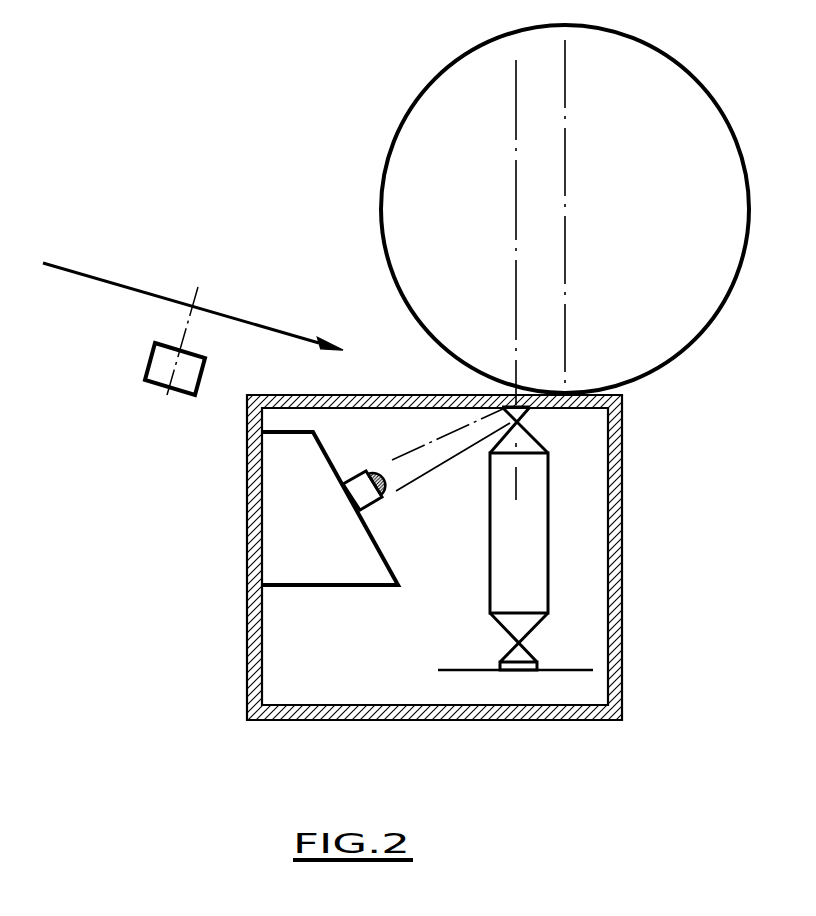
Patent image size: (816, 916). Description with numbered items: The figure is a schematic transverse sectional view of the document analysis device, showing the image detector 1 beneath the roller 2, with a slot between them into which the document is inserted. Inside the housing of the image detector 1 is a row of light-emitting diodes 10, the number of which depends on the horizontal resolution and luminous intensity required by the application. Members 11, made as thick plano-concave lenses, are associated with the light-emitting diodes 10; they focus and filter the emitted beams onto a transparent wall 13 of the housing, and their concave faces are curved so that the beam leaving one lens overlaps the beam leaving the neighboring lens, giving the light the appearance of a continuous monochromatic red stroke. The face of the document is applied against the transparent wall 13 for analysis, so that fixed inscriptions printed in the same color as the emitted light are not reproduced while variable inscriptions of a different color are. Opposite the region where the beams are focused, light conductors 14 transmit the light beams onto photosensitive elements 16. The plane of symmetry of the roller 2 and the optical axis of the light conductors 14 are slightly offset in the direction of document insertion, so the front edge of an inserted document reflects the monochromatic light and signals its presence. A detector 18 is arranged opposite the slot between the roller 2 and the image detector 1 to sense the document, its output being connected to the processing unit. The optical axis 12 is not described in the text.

The image detector 1 is at (198, 528).
The roller 2 is at (662, 87).
The light-emitting diodes 10 is at (358, 486).
The members 11 is at (386, 480).
The optical axis 12 is at (445, 470).
The transparent wall 13 is at (372, 395).
The light conductors 14 is at (528, 546).
The photosensitive elements 16 is at (522, 668).
The detector 18 is at (152, 372).